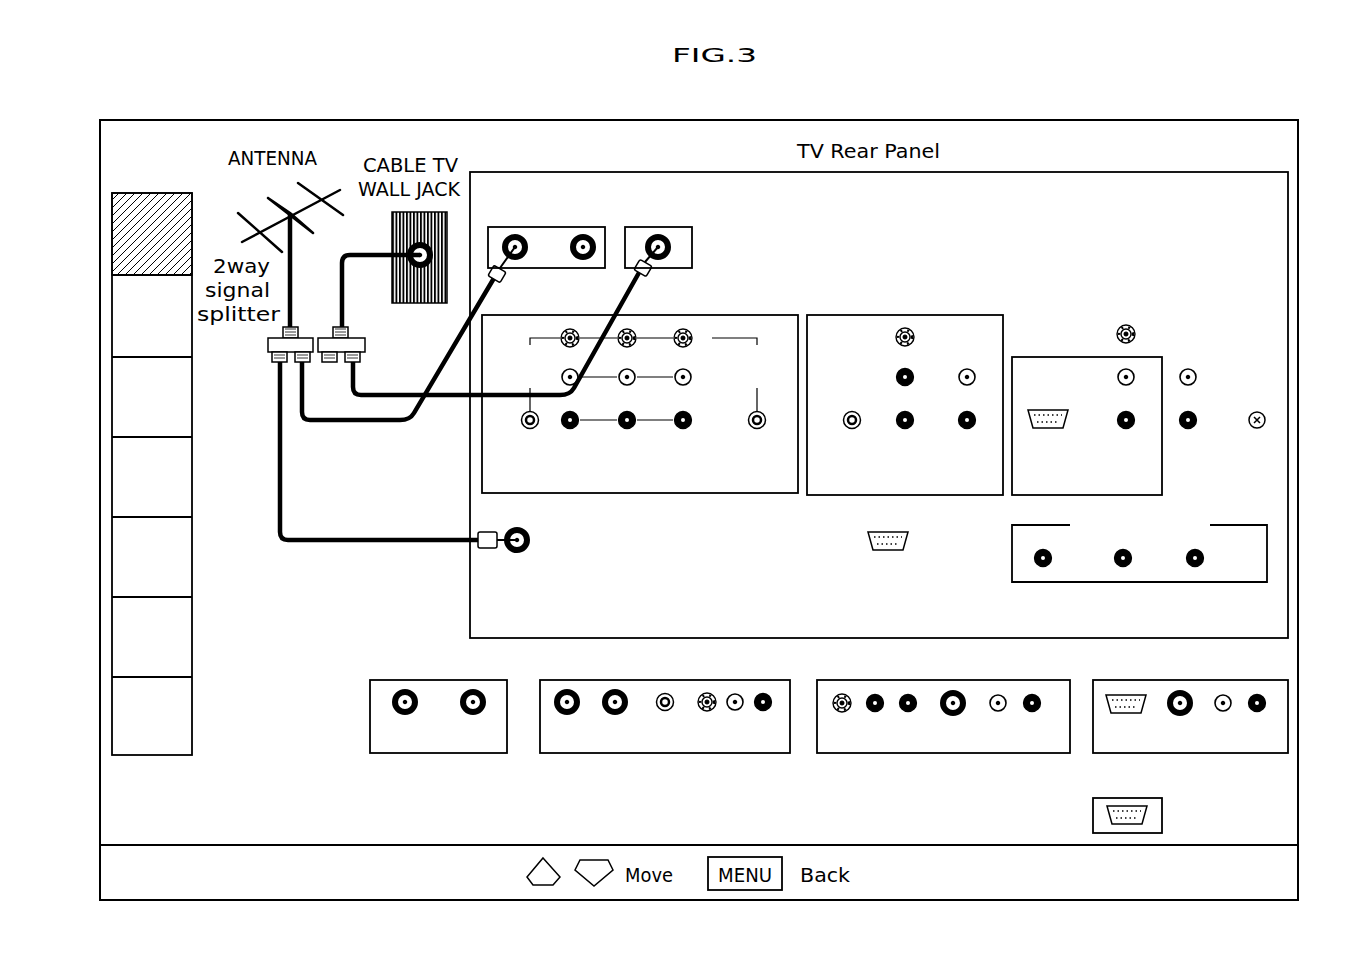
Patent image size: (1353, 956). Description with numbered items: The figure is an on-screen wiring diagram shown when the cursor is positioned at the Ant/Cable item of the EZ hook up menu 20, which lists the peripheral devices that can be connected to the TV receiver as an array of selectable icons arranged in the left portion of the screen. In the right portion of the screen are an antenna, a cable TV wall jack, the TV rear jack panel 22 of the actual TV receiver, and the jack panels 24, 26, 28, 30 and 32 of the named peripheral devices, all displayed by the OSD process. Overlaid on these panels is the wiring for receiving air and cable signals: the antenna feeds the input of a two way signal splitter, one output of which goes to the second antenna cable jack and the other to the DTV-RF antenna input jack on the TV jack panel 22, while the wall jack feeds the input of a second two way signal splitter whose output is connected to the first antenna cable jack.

The menu 20 is at (153, 758).
The TV jack panel 22 is at (470, 605).
The jack panel 24 is at (430, 754).
The jack panel 26 is at (623, 754).
The jack panel 28 is at (905, 754).
The jack panel 30 is at (1198, 754).
The jack panel 32 is at (1163, 813).